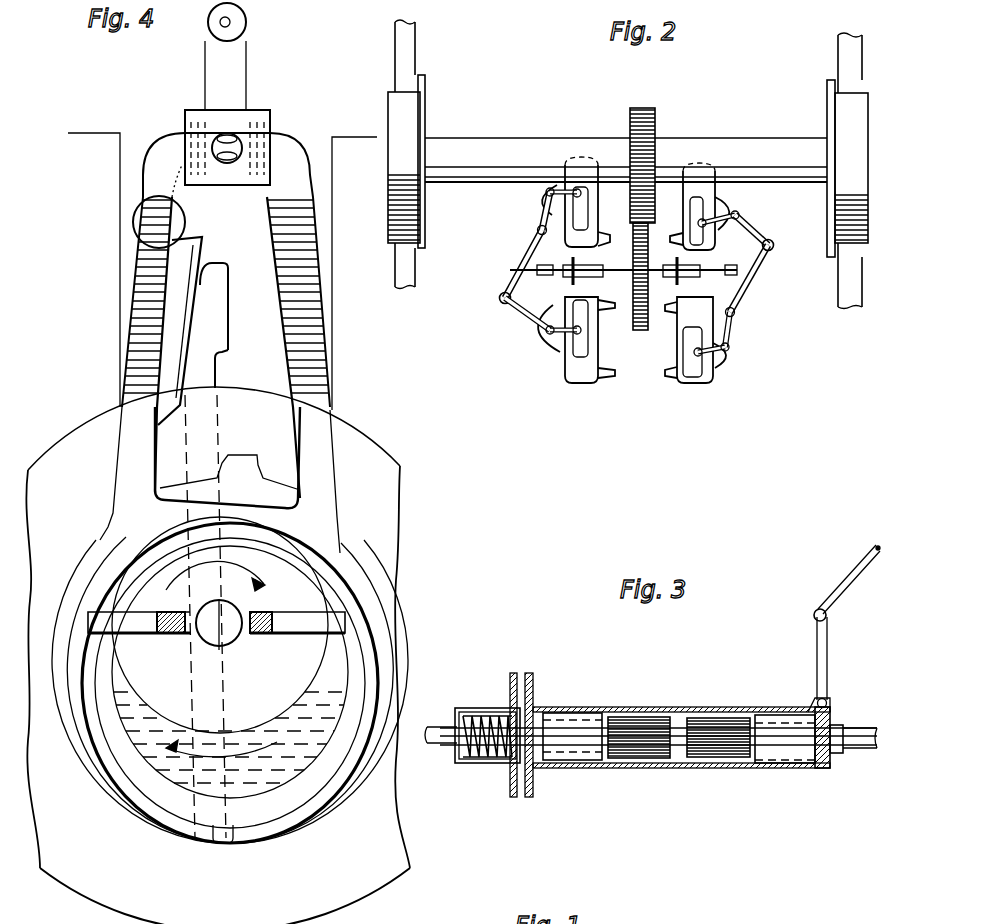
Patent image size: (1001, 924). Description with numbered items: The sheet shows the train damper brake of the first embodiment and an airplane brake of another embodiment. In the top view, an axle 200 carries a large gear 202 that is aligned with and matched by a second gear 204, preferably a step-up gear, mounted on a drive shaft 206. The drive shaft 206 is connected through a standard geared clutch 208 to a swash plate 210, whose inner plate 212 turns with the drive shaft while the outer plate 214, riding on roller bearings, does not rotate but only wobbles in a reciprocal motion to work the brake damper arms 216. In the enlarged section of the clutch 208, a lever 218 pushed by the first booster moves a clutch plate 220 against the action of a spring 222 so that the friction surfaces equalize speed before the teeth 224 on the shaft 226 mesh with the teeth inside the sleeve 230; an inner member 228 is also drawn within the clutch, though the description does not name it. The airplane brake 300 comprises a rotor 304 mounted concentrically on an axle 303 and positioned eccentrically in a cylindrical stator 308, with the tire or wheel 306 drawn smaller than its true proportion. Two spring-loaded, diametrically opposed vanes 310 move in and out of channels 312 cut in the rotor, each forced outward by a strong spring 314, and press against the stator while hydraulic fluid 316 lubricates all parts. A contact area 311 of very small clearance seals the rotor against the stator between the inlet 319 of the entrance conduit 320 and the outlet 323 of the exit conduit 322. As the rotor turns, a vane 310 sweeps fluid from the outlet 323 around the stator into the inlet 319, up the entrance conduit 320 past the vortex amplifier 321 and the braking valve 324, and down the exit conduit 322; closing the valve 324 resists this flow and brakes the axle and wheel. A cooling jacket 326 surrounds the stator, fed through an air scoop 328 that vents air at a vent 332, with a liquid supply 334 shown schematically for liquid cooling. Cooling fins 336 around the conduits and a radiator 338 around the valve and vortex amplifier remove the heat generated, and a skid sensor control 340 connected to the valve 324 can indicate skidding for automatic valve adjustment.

In FIG. 2, the axle 200 is at (497, 157).
In FIG. 2, the large gear 202 is at (657, 118).
In FIG. 2, the gear 204 is at (652, 332).
In FIG. 2, the drive shaft 206 is at (620, 273).
In FIG. 2, the geared clutch 208 is at (737, 290).
In FIG. 3, the geared clutch 208 is at (630, 777).
In FIG. 2, the swash plate 210 is at (533, 263).
In FIG. 2, the inner plate 212 is at (510, 280).
In FIG. 2, the outer plate 214 is at (515, 320).
In FIG. 2, the brake damper arms 216 is at (743, 217).
In FIG. 3, the lever 218 is at (817, 672).
In FIG. 3, the clutch plate 220 is at (527, 678).
In FIG. 3, the spring 222 is at (475, 720).
In FIG. 3, the teeth 224 is at (658, 752).
In FIG. 3, the shaft 226 is at (533, 733).
In FIG. 3, the inner sleeve 228 is at (578, 753).
In FIG. 3, the sleeve 230 is at (637, 708).
In FIG. 4, the brake 300 is at (104, 357).
In FIG. 4, the axle 303 is at (223, 625).
In FIG. 4, the rotor 304 is at (184, 683).
In FIG. 4, the wheel 306 is at (214, 885).
In FIG. 4, the stator 308 is at (257, 807).
In FIG. 4, the vanes 310 is at (150, 540).
In FIG. 4, the contact area 311 is at (333, 530).
In FIG. 4, the channels 312 is at (263, 633).
In FIG. 4, the spring 314 is at (173, 612).
In FIG. 4, the hydraulic fluid 316 is at (293, 750).
In FIG. 4, the inlet 319 is at (133, 517).
In FIG. 4, the entrance conduit 320 is at (120, 407).
In FIG. 4, the vortex amplifier 321 is at (186, 218).
In FIG. 4, the exit conduit 322 is at (325, 413).
In FIG. 4, the outlet 323 is at (322, 517).
In FIG. 4, the valve 324 is at (229, 131).
In FIG. 4, the cooling jacket 326 is at (123, 805).
In FIG. 4, the air scoop 328 is at (222, 357).
In FIG. 4, the vent 332 is at (233, 847).
In FIG. 4, the liquid supply 334 is at (230, 737).
In FIG. 4, the cooling fins 336 is at (322, 283).
In FIG. 4, the radiator 338 is at (275, 119).
In FIG. 4, the skid sensor control 340 is at (231, 22).